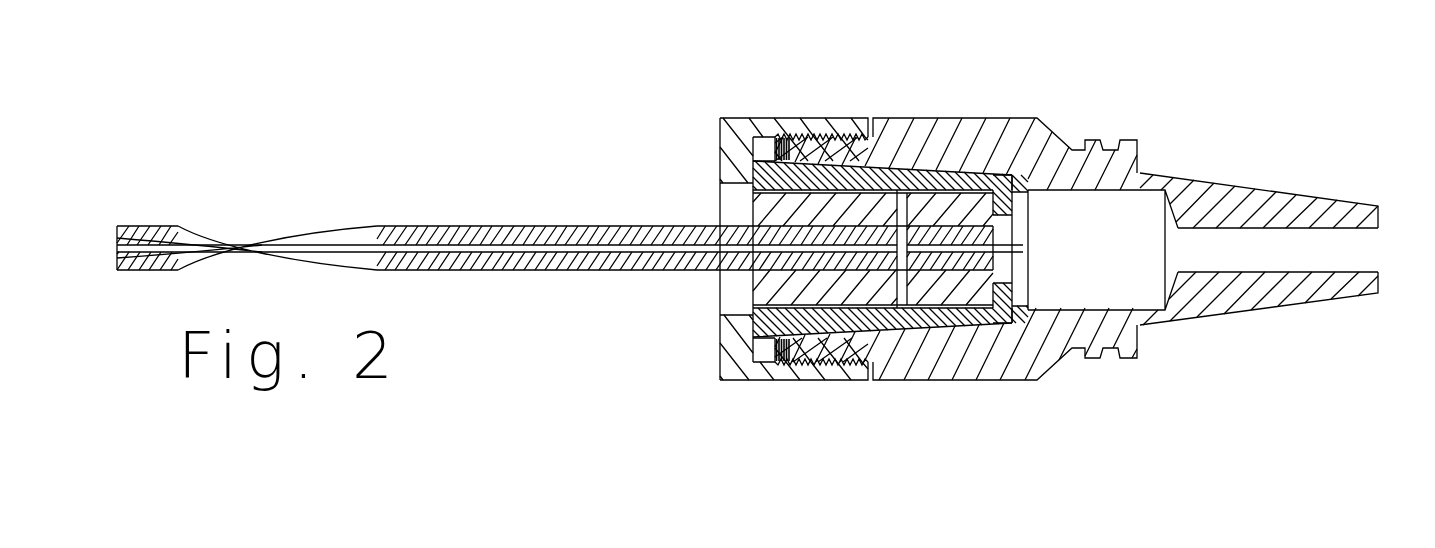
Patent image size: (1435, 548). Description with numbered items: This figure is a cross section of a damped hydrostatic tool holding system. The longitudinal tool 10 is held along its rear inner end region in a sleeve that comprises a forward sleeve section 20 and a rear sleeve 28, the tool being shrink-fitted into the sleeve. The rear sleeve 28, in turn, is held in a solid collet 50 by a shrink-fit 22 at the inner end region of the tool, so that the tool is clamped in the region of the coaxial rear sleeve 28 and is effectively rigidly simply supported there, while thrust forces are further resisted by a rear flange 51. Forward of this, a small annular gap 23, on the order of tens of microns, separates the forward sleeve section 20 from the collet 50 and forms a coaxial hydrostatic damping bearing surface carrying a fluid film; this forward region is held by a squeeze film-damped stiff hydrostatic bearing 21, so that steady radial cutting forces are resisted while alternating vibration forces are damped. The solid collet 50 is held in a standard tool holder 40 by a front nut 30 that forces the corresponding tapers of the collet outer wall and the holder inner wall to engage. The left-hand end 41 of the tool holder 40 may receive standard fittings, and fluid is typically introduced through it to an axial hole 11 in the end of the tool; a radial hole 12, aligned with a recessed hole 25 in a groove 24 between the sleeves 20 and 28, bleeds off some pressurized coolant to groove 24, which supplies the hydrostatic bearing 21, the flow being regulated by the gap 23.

The longitudinal tool 10 is at (348, 222).
The axial hole 11 is at (990, 252).
The radial hole 12 is at (845, 350).
The forward sleeve section 20 is at (753, 205).
The hydrostatic bearing 21 is at (800, 338).
The shrink-fit 22 is at (930, 320).
The annular gap 23 is at (888, 272).
The groove 24 is at (900, 190).
The recessed hole 25 is at (948, 170).
The rear sleeve 28 is at (958, 290).
The front nut 30 is at (740, 118).
The tool holder 40 is at (1227, 180).
The left-hand end 41 is at (1347, 250).
The solid collet 50 is at (815, 137).
The rear flange 51 is at (1005, 190).